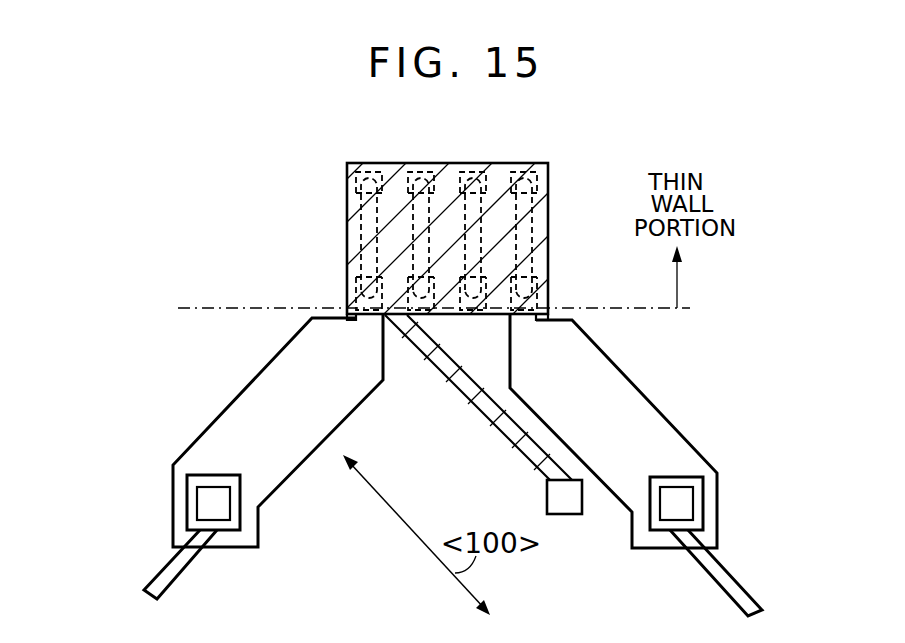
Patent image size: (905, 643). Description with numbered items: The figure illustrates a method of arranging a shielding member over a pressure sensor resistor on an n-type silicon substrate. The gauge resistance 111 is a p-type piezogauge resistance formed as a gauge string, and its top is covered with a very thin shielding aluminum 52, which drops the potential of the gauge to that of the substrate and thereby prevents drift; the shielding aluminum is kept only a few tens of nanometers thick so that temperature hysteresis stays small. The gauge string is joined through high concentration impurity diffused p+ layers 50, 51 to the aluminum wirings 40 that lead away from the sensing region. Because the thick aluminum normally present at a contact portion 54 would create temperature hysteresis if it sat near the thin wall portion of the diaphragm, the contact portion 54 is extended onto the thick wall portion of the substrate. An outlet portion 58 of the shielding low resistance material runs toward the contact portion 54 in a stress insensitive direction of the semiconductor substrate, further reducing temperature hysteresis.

The aluminum wiring 40 is at (160, 575).
The p+ layer 50 is at (628, 402).
The p+ layer 51 is at (504, 165).
The shielding aluminum 52 is at (347, 225).
The contact portion 54 is at (547, 495).
The outlet portion 58 is at (473, 403).
The gauge resistance 111 is at (548, 258).